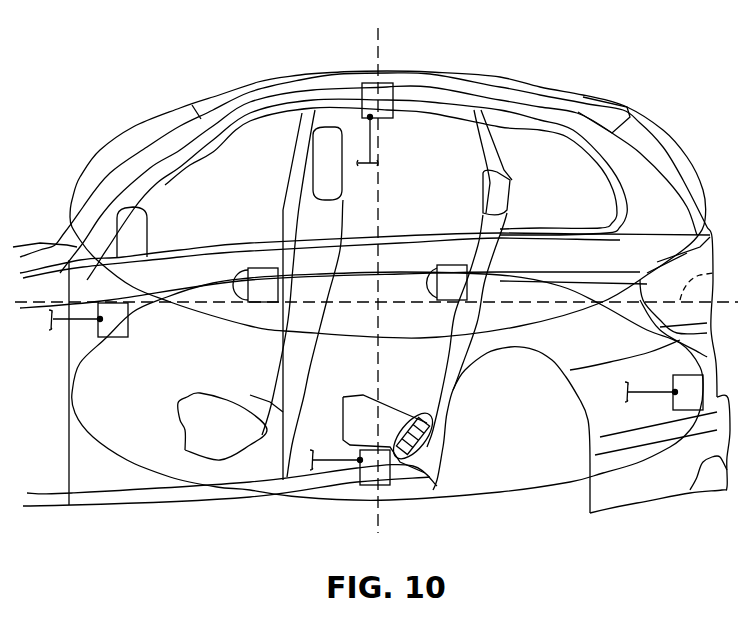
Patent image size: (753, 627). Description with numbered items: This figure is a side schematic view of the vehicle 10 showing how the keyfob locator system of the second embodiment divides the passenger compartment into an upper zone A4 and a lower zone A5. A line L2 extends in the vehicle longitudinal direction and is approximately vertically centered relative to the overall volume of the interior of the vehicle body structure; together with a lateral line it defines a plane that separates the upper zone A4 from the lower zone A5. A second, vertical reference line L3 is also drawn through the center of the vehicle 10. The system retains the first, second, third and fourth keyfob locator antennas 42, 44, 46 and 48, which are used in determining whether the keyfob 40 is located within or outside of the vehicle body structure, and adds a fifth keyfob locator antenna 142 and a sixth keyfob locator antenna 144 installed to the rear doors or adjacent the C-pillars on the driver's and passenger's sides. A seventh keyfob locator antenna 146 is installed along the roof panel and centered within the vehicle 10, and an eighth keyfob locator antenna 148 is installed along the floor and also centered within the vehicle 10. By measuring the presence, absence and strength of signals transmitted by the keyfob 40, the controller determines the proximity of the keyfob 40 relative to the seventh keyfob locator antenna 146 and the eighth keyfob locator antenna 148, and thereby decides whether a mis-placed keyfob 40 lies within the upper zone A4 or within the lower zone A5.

The vehicle 10 is at (180, 50).
The keyfob 40 is at (413, 420).
The first keyfob locator antenna 42 is at (228, 258).
The second keyfob locator antenna 44 is at (264, 280).
The third keyfob locator antenna 46 is at (113, 317).
The fourth keyfob locator antenna 48 is at (690, 385).
The fifth keyfob locator antenna 142 is at (429, 243).
The sixth keyfob locator antenna 144 is at (453, 274).
The seventh keyfob locator antenna 146 is at (363, 91).
The eighth keyfob locator antenna 148 is at (385, 477).
The line L2 is at (713, 272).
The vertical axis L3 is at (380, 50).
The upper zone A4 is at (680, 150).
The lower zone A5 is at (532, 490).